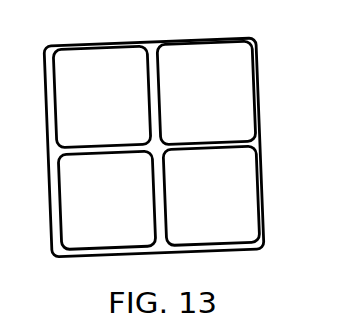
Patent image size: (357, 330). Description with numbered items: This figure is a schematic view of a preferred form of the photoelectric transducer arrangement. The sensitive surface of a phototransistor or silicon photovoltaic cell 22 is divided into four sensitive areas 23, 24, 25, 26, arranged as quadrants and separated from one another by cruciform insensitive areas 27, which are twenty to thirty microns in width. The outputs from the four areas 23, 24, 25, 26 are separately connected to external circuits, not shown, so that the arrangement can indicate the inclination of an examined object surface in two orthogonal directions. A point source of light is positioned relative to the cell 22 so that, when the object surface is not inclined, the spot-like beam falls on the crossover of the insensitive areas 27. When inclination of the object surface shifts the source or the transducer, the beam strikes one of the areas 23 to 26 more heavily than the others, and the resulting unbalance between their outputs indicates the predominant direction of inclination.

The phototransistor or silicon photovoltaic cell 22 is at (258, 53).
The sensitive area 23 is at (206, 93).
The sensitive area 24 is at (102, 97).
The sensitive area 25 is at (211, 195).
The sensitive area 26 is at (107, 200).
The cruciform insensitive areas 27 is at (239, 147).